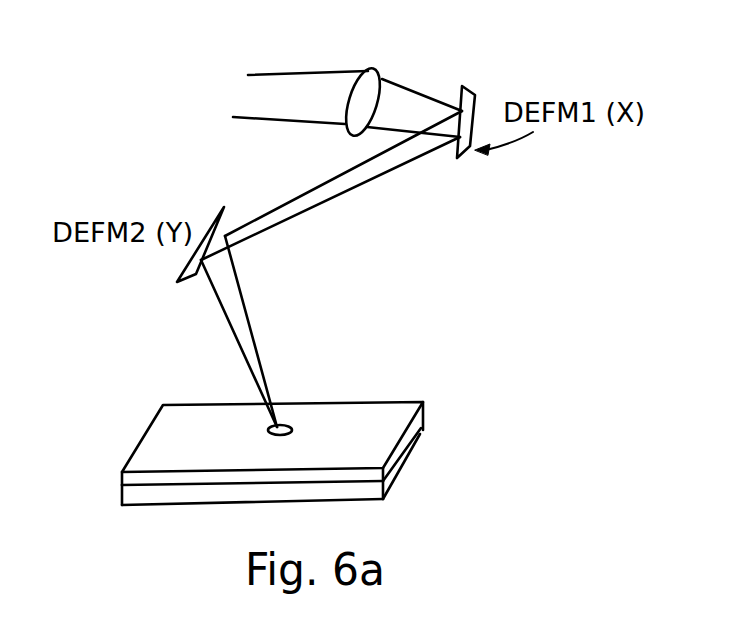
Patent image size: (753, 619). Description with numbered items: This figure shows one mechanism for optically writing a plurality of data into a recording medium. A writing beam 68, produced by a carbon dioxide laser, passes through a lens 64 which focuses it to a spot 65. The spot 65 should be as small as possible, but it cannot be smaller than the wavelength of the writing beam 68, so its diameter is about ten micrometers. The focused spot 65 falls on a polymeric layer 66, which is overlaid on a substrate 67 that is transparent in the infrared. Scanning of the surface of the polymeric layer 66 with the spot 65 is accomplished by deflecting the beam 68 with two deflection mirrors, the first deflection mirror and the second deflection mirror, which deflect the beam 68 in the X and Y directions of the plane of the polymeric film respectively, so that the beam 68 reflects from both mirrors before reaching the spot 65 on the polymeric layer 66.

The lens 64 is at (380, 72).
The spot 65 is at (285, 422).
The polymeric layer 66 is at (419, 433).
The substrate 67 is at (360, 492).
The writing beam 68 is at (287, 108).